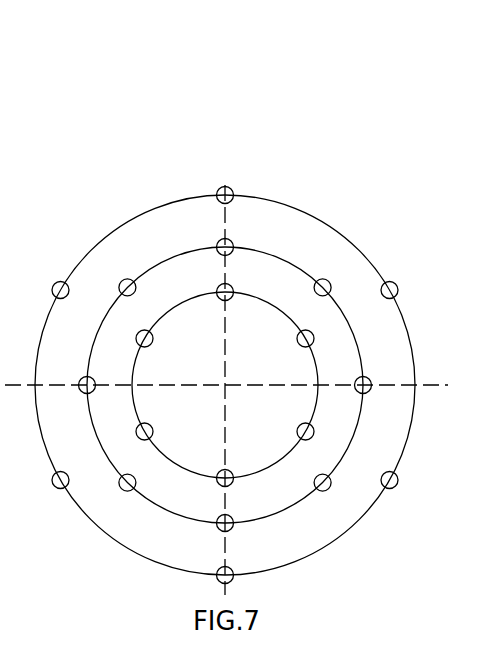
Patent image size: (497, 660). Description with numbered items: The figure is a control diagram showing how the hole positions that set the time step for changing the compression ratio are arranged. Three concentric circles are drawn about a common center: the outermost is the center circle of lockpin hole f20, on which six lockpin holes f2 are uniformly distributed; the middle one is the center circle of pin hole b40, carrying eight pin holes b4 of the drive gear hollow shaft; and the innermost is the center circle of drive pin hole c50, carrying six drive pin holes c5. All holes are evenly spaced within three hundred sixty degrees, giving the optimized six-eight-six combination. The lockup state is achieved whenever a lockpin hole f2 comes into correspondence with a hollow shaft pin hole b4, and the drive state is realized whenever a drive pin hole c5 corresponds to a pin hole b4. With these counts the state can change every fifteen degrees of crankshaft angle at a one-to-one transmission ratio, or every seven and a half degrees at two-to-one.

The lockpin hole f2 is at (225, 298).
The pin hole b4 is at (225, 298).
The drive pin hole c5 is at (212, 298).
The center circle of lockpin hole f20 is at (247, 311).
The center circle of pin hole b40 is at (261, 311).
The center circle of drive pin hole c50 is at (289, 310).